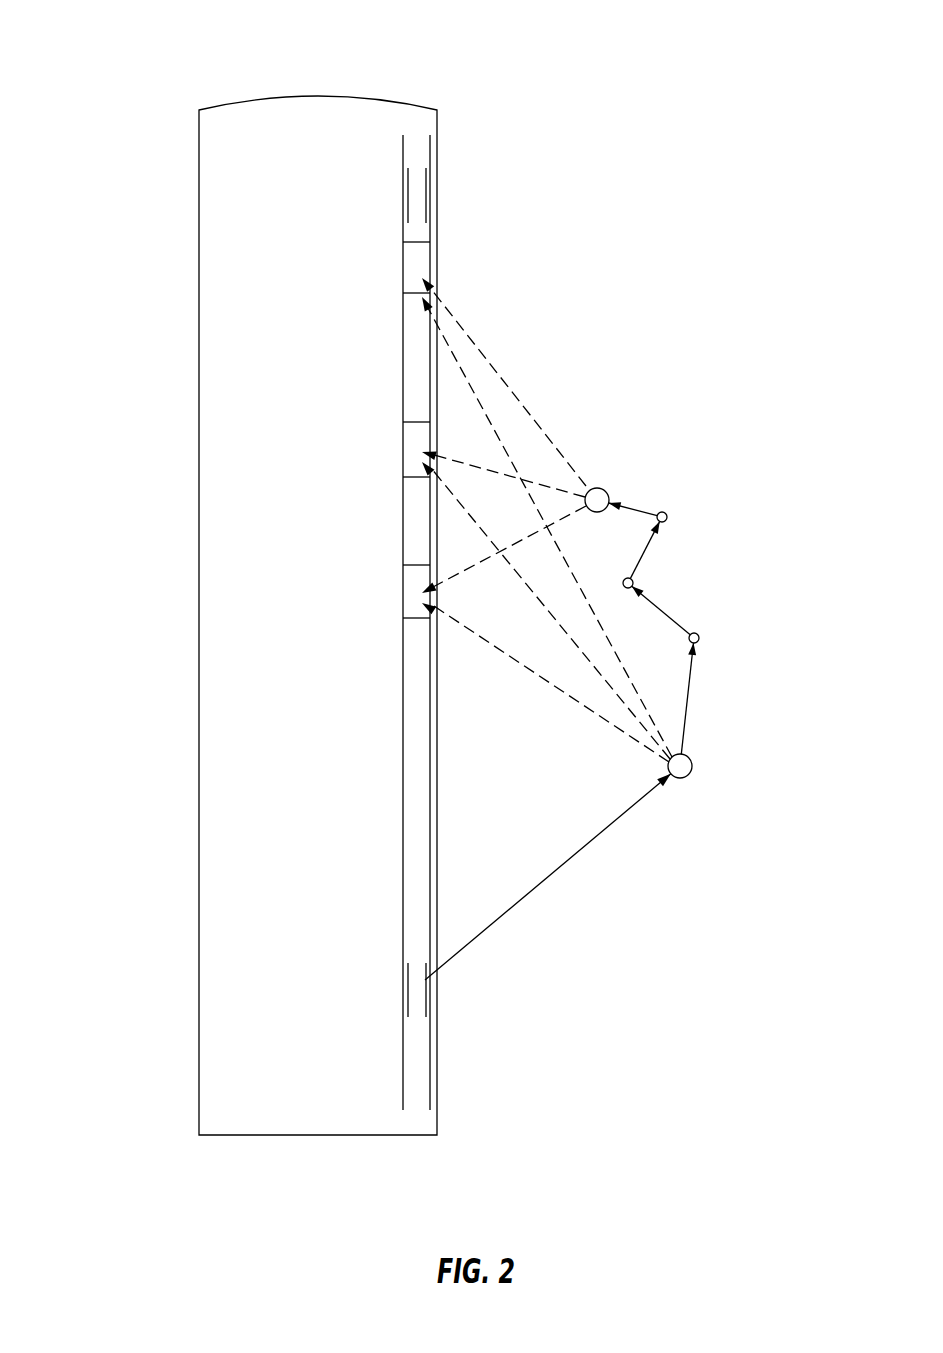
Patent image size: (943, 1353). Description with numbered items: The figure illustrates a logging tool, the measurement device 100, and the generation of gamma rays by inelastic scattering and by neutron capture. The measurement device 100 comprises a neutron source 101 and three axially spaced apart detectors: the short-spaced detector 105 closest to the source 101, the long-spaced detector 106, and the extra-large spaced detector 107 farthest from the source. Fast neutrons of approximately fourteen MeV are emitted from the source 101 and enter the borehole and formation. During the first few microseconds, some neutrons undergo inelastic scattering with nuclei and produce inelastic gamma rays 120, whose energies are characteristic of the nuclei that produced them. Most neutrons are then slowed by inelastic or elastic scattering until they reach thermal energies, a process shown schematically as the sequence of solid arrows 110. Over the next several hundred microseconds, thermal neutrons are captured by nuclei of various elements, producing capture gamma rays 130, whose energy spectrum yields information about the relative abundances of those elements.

The measurement device 100 is at (138, 53).
The neutron source 101 is at (232, 803).
The short-spaced detector 105 is at (232, 592).
The long-spaced detector 106 is at (232, 449).
The extra-large spaced detector 107 is at (232, 268).
The sequence of solid arrows 110 is at (643, 557).
The inelastic gamma rays 120 is at (623, 700).
The capture gamma rays 130 is at (552, 528).